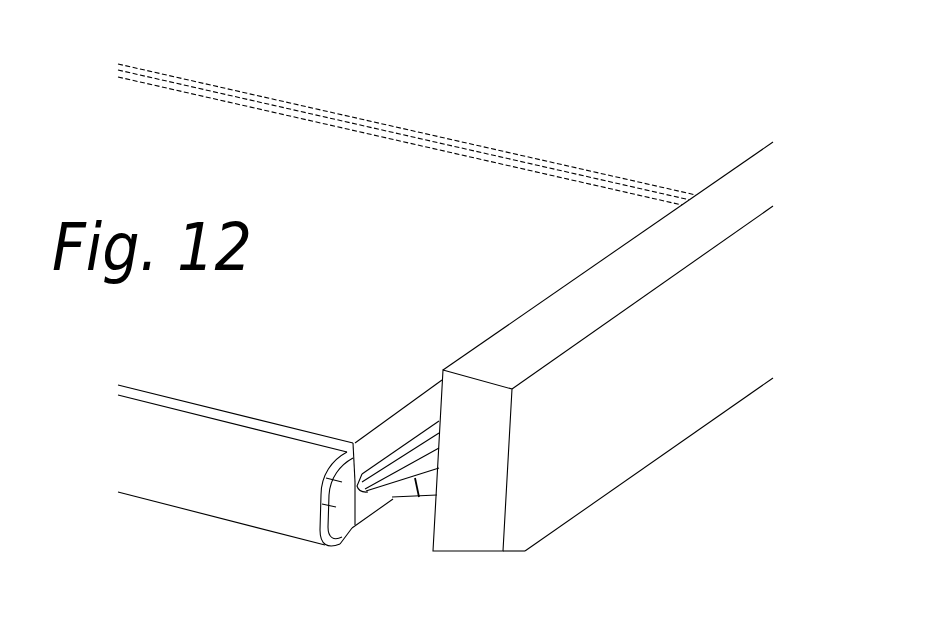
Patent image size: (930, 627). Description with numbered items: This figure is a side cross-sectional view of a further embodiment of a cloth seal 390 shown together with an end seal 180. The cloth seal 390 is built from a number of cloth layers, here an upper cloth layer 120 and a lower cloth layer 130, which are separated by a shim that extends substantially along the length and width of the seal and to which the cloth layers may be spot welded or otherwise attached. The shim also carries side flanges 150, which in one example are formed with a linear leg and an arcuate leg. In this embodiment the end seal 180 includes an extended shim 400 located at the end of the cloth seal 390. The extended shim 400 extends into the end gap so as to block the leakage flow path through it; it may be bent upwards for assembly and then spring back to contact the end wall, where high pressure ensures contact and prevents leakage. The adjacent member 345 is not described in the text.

The cloth seal 390 is at (407, 119).
The upper cloth layer 120 is at (533, 200).
The frame member 345 is at (617, 453).
The side flanges 150 is at (176, 516).
The lower cloth layer 130 is at (354, 528).
The end seal 180 is at (389, 499).
The extended shim 400 is at (417, 478).